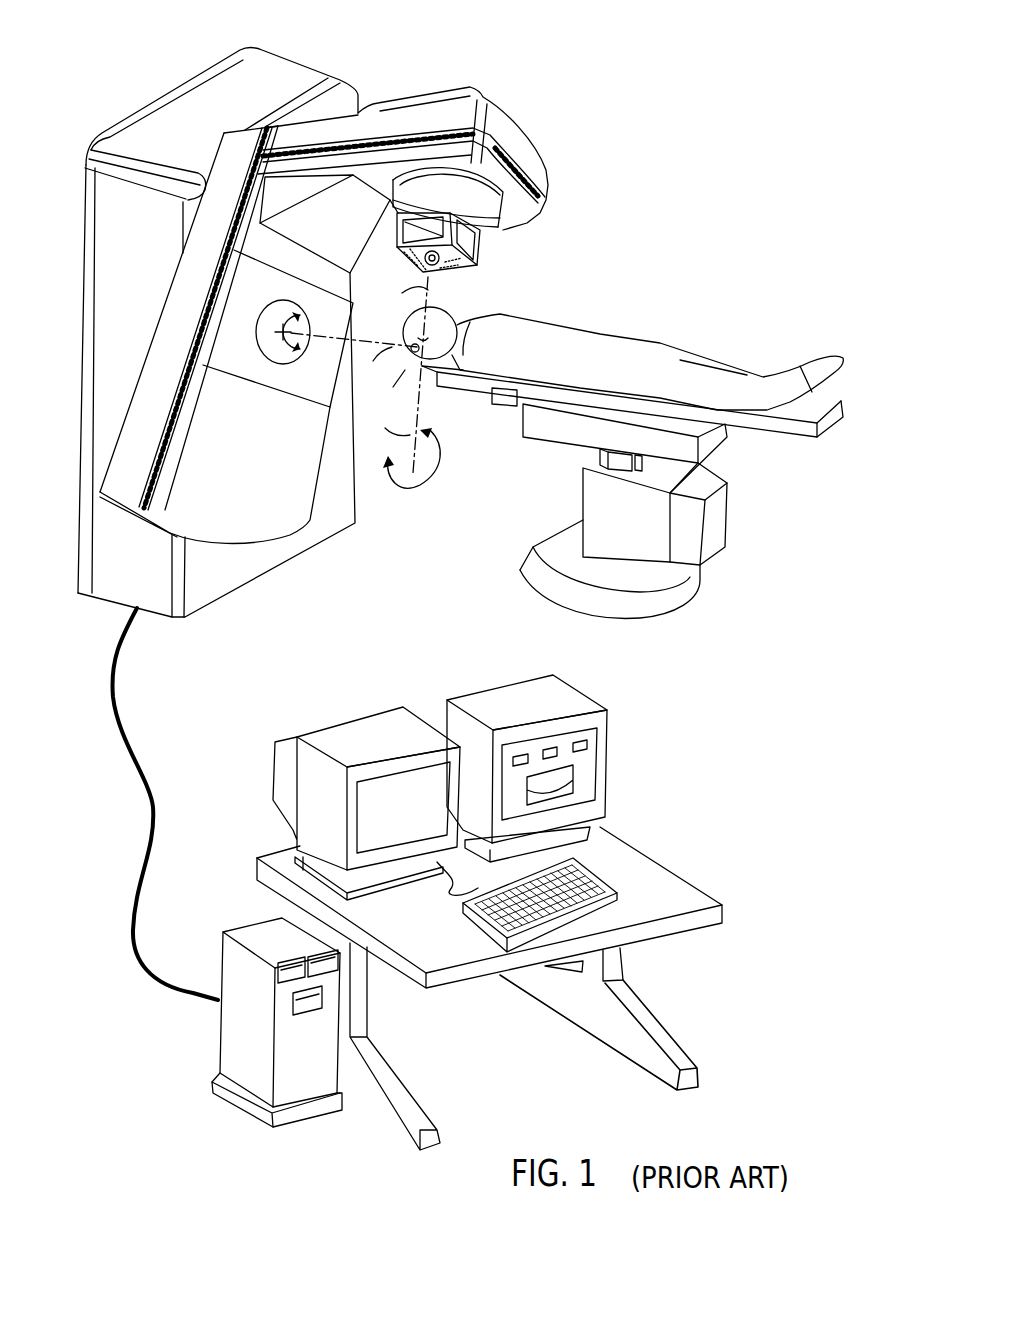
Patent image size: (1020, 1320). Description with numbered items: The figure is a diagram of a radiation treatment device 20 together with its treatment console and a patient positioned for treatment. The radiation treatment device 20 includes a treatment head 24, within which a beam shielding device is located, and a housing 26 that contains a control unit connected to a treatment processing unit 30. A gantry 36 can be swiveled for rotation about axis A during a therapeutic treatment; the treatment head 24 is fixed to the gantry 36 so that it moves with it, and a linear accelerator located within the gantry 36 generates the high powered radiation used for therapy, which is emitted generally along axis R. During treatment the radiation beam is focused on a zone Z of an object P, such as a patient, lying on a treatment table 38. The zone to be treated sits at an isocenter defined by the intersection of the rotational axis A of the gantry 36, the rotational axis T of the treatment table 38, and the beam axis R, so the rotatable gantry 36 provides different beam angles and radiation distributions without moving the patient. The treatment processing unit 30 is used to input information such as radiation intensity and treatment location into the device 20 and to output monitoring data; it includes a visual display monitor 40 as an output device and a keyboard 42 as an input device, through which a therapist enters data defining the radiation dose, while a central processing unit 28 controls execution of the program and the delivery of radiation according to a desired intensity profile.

The radiation treatment device 20 is at (680, 155).
The treatment head 24 is at (490, 232).
The housing 26 is at (293, 82).
The central processing unit 28 is at (230, 1035).
The treatment processing unit 30 is at (625, 684).
The gantry 36 is at (142, 430).
The treatment table 38 is at (557, 432).
The visual display monitor 40 is at (602, 753).
The keyboard 42 is at (600, 873).
The object P is at (562, 340).